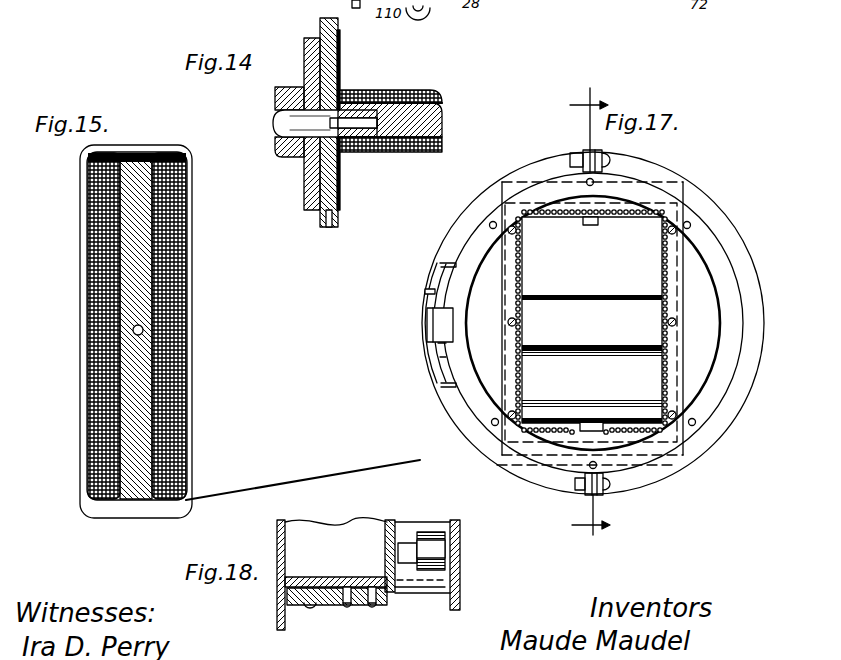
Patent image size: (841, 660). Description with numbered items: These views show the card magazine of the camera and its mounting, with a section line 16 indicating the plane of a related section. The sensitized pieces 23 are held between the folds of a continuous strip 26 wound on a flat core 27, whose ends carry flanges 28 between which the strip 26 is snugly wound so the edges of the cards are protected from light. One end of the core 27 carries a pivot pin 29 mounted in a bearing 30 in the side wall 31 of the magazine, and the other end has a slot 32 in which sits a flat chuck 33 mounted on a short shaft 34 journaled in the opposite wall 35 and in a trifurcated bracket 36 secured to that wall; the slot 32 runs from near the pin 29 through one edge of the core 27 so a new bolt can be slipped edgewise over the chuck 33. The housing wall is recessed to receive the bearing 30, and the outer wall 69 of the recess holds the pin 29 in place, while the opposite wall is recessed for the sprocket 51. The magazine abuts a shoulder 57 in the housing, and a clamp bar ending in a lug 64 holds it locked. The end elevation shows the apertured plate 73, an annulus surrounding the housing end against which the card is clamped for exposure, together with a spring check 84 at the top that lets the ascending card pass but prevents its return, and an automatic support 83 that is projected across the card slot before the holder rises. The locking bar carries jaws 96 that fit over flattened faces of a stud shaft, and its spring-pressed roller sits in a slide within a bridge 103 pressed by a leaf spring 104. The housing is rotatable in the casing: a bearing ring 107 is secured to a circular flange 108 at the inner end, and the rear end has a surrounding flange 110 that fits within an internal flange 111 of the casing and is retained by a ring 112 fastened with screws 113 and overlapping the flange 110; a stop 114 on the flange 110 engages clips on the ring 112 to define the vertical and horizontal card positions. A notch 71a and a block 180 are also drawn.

In FIG. 14, the flanges 28 is at (338, 72).
In FIG. 15, the flanges 28 is at (192, 272).
In FIG. 17, the flanges 28 is at (657, 302).
In FIG. 14, the trifurcated bracket 36 is at (312, 170).
In FIG. 14, the sprocket 51 is at (278, 95).
In FIG. 14, the short shaft 34 is at (292, 118).
In FIG. 14, the slot 32 is at (442, 124).
In FIG. 15, the slot 32 is at (90, 405).
In FIG. 14, the flat core 27 is at (398, 92).
In FIG. 15, the flat core 27 is at (92, 332).
In FIG. 17, the flat core 27 is at (643, 332).
In FIG. 14, the sensitized pieces 23 is at (430, 95).
In FIG. 15, the sensitized pieces 23 is at (185, 408).
In FIG. 14, the flat chuck 33 is at (370, 130).
In FIG. 14, the wall of the magazine 35 is at (328, 227).
In FIG. 15, the pivot pin 29 is at (145, 330).
In FIG. 18, the pivot pin 29 is at (407, 548).
In FIG. 15, the continuous strip 26 is at (262, 498).
In FIG. 17, the surrounding flange 110 is at (720, 423).
In FIG. 18, the surrounding flange 110 is at (323, 588).
In FIG. 17, the lug 64 is at (657, 172).
In FIG. 17, the section line 16 is at (590, 313).
In FIG. 17, the shoulder 57 is at (513, 458).
In FIG. 17, the bearing ring 107 is at (688, 213).
In FIG. 17, the plate 73 is at (632, 218).
In FIG. 17, the spring check 84 is at (590, 226).
In FIG. 17, the automatic support 83 is at (573, 434).
In FIG. 17, the notch 71a is at (607, 425).
In FIG. 17, the bridge 103 is at (443, 365).
In FIG. 17, the block 180 is at (427, 327).
In FIG. 17, the leaf spring 104 is at (428, 292).
In FIG. 17, the circular flange 108 is at (438, 343).
In FIG. 17, the jaws 96 is at (440, 357).
In FIG. 18, the ring 112 is at (285, 597).
In FIG. 18, the outer wall of the recess 69 is at (383, 521).
In FIG. 18, the side wall of the magazine 31 is at (460, 553).
In FIG. 18, the bearing 30 is at (430, 537).
In FIG. 18, the internal flange 111 is at (293, 580).
In FIG. 18, the stop 114 is at (332, 606).
In FIG. 18, the screws 113 is at (313, 607).